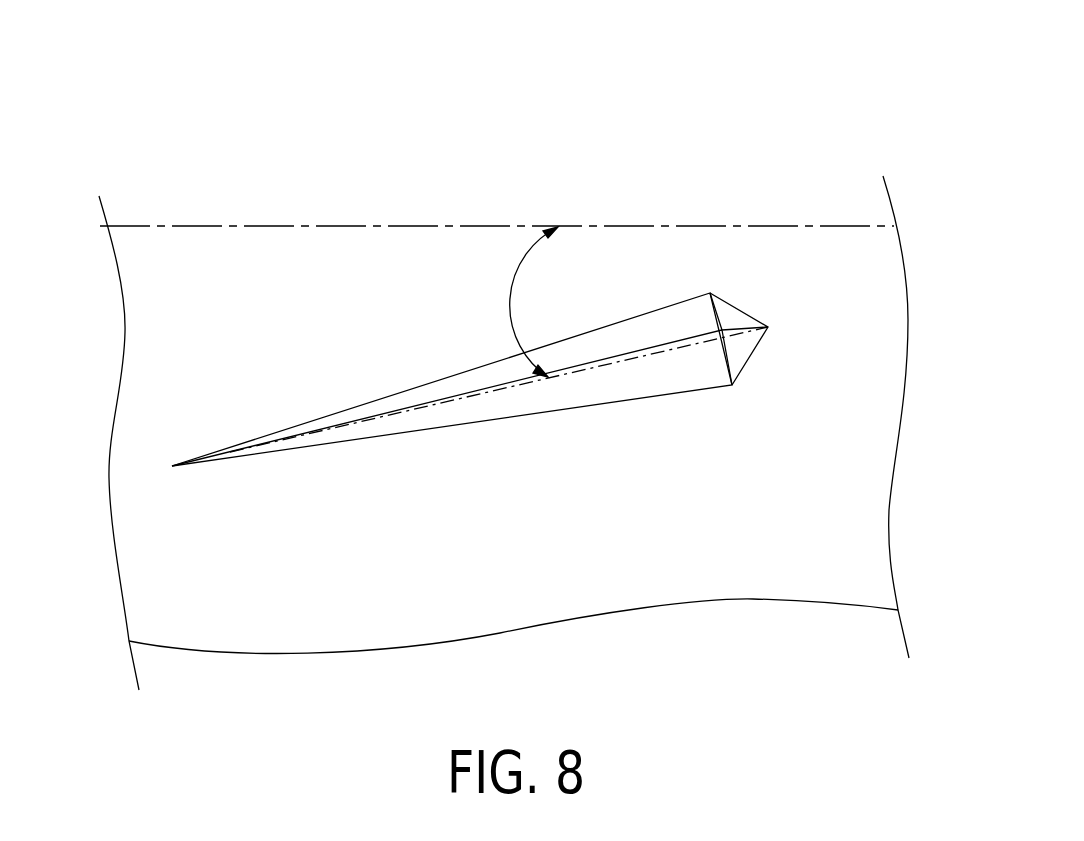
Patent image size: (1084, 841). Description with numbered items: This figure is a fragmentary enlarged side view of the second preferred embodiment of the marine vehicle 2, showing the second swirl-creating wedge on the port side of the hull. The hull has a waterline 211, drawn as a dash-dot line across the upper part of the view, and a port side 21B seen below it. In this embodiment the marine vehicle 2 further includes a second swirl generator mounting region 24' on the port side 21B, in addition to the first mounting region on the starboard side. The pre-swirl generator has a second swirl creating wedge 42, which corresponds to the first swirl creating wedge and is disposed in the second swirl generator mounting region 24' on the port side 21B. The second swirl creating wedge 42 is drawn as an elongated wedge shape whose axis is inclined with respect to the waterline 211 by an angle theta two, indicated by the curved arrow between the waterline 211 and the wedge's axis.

The marine vehicle 2 is at (356, 112).
The waterline 211 is at (197, 226).
The second swirl generator mounting region 24' is at (448, 188).
The port side 21B is at (403, 253).
The second swirl creating wedge 42 is at (699, 256).